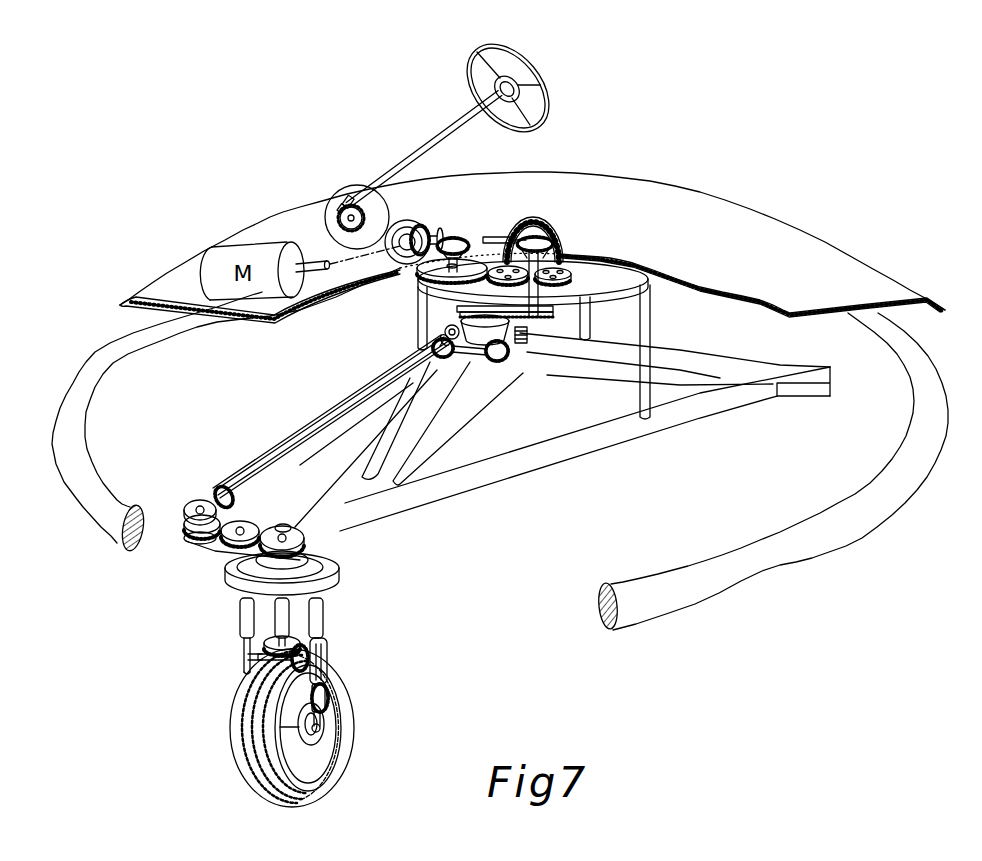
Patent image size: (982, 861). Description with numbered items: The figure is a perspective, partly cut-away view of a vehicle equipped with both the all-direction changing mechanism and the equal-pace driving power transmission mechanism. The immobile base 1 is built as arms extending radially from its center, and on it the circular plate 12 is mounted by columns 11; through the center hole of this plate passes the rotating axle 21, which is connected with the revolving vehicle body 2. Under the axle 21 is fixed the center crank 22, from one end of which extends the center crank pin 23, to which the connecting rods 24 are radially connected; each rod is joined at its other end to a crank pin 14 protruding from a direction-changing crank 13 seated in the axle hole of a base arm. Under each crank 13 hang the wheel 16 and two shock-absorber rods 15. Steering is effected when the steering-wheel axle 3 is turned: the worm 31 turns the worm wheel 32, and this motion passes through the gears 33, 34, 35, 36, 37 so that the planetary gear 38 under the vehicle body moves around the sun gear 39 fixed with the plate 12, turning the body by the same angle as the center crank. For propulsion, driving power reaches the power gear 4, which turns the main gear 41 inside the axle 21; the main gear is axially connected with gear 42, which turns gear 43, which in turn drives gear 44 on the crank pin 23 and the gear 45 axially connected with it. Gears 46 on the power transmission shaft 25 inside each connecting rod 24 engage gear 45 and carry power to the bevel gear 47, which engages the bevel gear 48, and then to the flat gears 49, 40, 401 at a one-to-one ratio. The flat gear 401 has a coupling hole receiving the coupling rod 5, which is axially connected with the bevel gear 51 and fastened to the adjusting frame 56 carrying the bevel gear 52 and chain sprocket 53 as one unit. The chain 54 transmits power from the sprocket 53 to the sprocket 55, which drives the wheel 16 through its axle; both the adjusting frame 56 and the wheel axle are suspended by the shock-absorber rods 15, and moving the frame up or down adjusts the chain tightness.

The immobile base 1 is at (787, 373).
The revolving vehicle body 2 is at (747, 203).
The steering-wheel axle 3 is at (423, 147).
The power gear 4 is at (516, 237).
The coupling rod 5 is at (250, 657).
The columns 11 is at (647, 327).
The circular plate 12 is at (607, 283).
The direction-changing crank 13 is at (235, 540).
The crank pin 14 is at (197, 505).
The shock-absorber rods 15 is at (238, 610).
The wheel 16 is at (347, 757).
The rotating axle 21 is at (547, 263).
The center crank 22 is at (543, 310).
The center crank pin 23 is at (470, 312).
The connecting rods 24 is at (313, 417).
The power transmission shaft 25 is at (363, 393).
The worm 31 is at (343, 206).
The worm wheel 32 is at (352, 197).
The gear 33 is at (328, 196).
The gear 34 is at (407, 220).
The gear 35 is at (424, 228).
The gear 36 is at (456, 238).
The gear 37 is at (460, 240).
The planetary gear 38 is at (420, 290).
The sun gear 39 is at (563, 263).
The flat gear 40 is at (275, 550).
The flat gear 401 is at (285, 524).
The main gear 41 is at (546, 238).
The gear 42 is at (553, 312).
The gear 43 is at (537, 333).
The gear 44 is at (448, 330).
The gear 45 is at (497, 352).
The gears 46 is at (483, 330).
The bevel gear 47 is at (215, 493).
The bevel gear 48 is at (192, 520).
The flat gear 49 is at (195, 537).
The bevel gear 51 is at (273, 643).
The bevel gear 52 is at (260, 663).
The chain sprocket 53 is at (327, 650).
The chain 54 is at (327, 673).
The sprocket 55 is at (330, 730).
The adjusting frame 56 is at (293, 658).